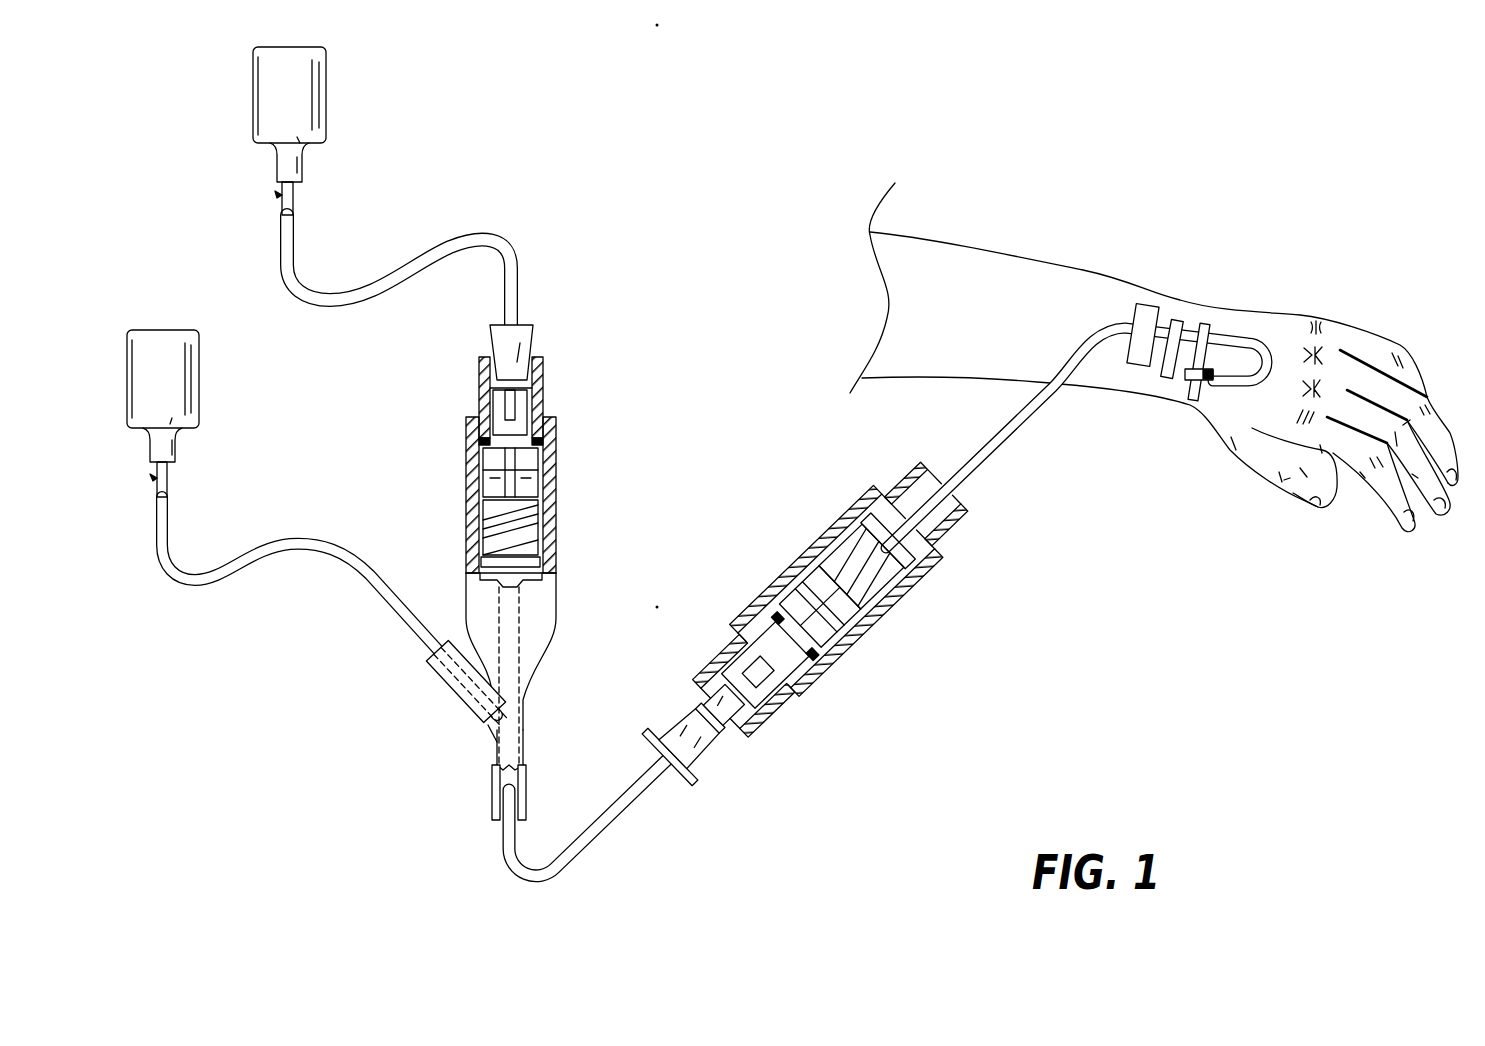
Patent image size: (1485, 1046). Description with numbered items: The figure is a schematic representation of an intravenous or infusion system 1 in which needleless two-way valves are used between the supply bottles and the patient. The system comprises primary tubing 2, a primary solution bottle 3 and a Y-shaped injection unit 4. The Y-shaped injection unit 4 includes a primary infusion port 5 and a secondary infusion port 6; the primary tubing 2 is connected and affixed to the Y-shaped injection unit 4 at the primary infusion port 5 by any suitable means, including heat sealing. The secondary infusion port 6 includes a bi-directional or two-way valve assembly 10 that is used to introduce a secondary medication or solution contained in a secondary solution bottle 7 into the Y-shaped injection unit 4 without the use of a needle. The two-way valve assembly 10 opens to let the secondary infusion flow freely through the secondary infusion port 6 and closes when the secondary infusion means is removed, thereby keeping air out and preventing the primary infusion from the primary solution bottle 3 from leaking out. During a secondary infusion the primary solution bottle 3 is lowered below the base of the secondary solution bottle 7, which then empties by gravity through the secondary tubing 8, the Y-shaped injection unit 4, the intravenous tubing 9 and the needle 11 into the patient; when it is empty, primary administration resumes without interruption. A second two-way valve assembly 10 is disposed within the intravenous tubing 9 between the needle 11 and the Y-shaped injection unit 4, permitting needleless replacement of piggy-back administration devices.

The infusion system 1 is at (682, 474).
The primary tubing 2 is at (197, 585).
The primary solution bottle 3 is at (150, 342).
The Y-shaped injection unit 4 is at (523, 733).
The primary infusion port 5 is at (452, 694).
The secondary infusion port 6 is at (537, 658).
The secondary solution bottle 7 is at (268, 81).
The secondary tubing 8 is at (493, 243).
The intravenous tubing 9 is at (497, 858).
The bi-directional valve assembly 10 is at (562, 485).
The needle 11 is at (1187, 375).